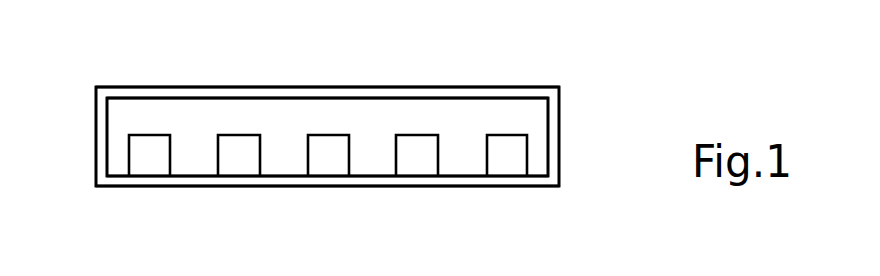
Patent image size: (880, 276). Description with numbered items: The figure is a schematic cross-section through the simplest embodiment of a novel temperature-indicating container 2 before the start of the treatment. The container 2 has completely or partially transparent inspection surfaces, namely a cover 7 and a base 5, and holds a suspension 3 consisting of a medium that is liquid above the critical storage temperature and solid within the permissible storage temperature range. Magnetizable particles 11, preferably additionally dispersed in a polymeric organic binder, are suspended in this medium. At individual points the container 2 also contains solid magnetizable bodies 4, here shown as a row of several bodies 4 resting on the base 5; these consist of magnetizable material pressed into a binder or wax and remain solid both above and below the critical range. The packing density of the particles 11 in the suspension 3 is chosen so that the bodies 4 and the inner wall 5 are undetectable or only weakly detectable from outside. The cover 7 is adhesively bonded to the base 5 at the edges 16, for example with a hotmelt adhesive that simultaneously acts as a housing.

The container 2 is at (357, 66).
The suspension 3 is at (149, 118).
The solid magnetizable body 4 is at (149, 167).
The base 5 is at (457, 178).
The cover 7 is at (470, 92).
The magnetizable particles 11 is at (238, 118).
The edges 16 is at (102, 110).